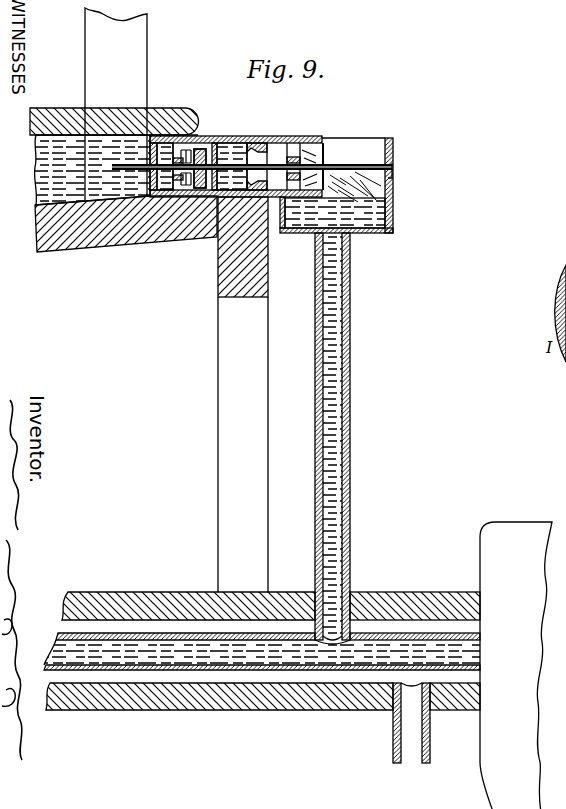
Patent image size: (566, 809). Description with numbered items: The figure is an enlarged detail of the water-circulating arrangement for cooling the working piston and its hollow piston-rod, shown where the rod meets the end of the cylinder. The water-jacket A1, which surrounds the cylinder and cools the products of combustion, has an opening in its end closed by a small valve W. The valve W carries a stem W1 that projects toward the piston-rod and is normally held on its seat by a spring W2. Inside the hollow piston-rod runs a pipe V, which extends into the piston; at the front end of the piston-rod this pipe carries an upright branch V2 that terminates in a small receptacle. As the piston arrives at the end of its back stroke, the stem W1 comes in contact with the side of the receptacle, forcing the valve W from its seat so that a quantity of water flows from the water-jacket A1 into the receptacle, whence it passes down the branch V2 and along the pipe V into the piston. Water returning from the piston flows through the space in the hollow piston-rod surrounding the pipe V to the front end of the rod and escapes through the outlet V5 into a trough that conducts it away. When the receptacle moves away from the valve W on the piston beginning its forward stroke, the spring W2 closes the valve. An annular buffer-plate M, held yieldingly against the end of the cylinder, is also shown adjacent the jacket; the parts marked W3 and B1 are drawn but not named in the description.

The water-jacket A1 is at (84, 109).
The spring W2 is at (187, 164).
The valve W is at (208, 166).
The valve stem W1 is at (358, 161).
The valve stem rod W3 is at (392, 170).
The annular buffer-plate M is at (243, 394).
The upright branch V2 is at (360, 420).
The lower frame block B1 is at (132, 601).
The pipe V is at (248, 628).
The outlet V5 is at (411, 723).